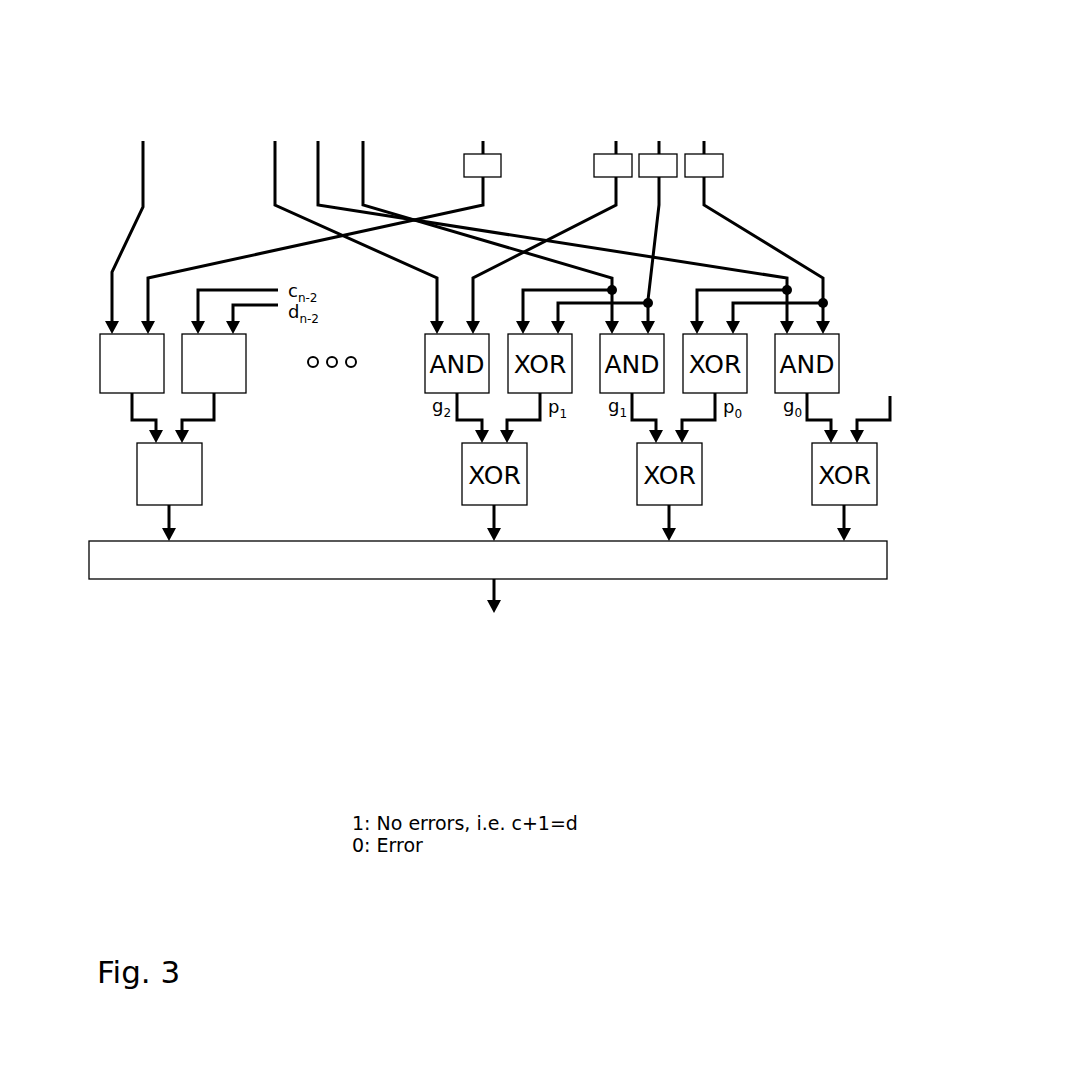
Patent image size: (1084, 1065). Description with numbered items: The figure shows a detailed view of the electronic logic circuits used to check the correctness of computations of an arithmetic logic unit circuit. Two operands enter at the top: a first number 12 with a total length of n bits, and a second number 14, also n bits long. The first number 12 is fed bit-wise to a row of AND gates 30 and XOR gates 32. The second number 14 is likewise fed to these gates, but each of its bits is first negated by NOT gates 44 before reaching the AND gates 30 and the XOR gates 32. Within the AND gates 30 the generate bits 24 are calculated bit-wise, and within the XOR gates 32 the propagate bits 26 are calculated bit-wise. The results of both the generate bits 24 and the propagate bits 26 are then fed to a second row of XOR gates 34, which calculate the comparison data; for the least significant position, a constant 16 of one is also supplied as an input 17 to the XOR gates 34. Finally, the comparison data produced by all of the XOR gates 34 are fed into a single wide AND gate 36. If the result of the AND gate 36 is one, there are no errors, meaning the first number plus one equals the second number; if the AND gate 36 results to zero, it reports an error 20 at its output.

The first number 12 is at (222, 63).
The second number 14 is at (560, 66).
The constant 16 is at (882, 361).
The input 17 is at (876, 404).
The error 20 is at (490, 615).
The generate bits 24 is at (112, 431).
The propagate bits 26 is at (254, 420).
The AND gates 30 is at (99, 330).
The XOR gates 32 is at (246, 363).
The XOR gates 34 is at (202, 475).
The AND gate 36 is at (222, 580).
The NOT gates 44 is at (723, 165).